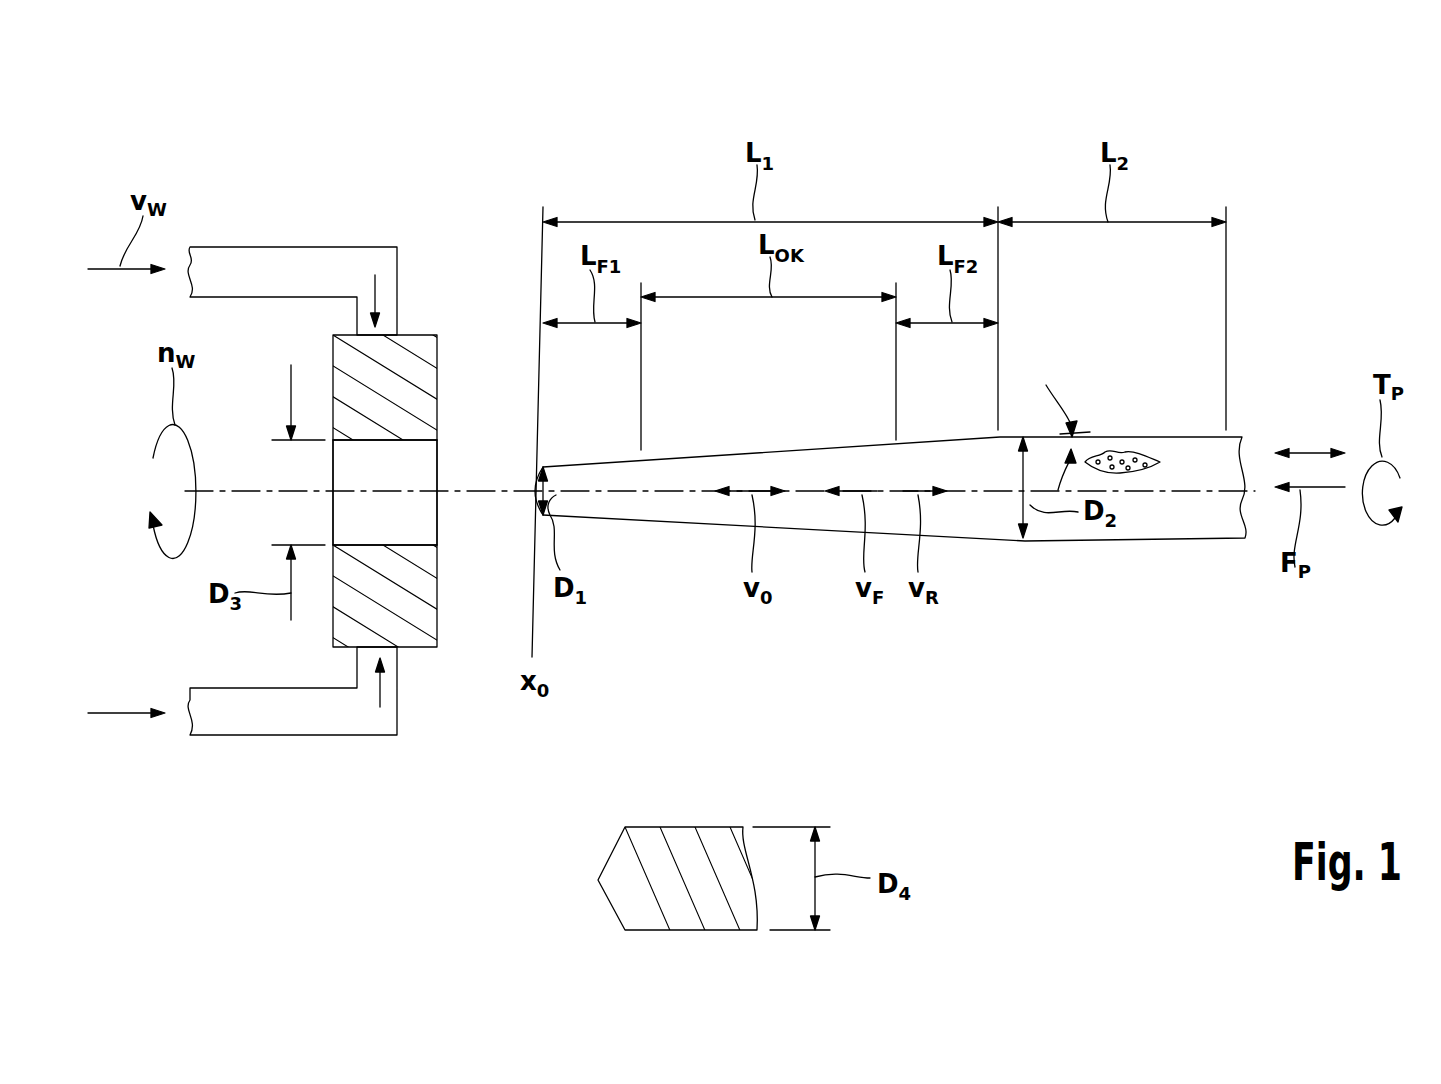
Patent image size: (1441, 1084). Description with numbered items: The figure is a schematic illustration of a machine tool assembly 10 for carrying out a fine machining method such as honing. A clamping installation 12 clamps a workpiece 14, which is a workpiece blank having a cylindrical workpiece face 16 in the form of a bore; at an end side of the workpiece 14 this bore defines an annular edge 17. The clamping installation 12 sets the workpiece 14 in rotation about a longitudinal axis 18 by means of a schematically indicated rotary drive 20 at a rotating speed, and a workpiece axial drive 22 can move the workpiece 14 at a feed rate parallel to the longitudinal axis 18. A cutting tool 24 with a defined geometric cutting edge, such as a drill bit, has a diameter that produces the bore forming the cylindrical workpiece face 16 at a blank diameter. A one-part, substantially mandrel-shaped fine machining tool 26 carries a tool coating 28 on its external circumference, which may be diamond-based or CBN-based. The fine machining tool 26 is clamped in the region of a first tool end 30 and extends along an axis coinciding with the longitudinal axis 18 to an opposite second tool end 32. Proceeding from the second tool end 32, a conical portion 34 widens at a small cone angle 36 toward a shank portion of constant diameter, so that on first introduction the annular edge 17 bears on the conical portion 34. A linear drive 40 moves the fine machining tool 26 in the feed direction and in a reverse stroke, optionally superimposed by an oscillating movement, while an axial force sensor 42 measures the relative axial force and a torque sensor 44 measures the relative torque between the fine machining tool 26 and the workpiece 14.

The machine tool assembly 10 is at (1284, 140).
The clamping installation 12 is at (300, 232).
The workpiece 14 is at (393, 443).
The cylindrical workpiece face 16 is at (392, 535).
The annular edge 17 is at (437, 440).
The longitudinal axis 18 is at (413, 492).
The rotary drive 20 is at (198, 488).
The workpiece axial drive 22 is at (93, 266).
The cutting tool 24 is at (627, 902).
The fine machining tool 26 is at (919, 522).
The tool coating 28 is at (1130, 455).
The first tool end 30 is at (1264, 382).
The second tool end 32 is at (580, 642).
The conical portion 34 is at (680, 515).
The cone angle 36 is at (1046, 385).
The linear drive 40 is at (1308, 450).
The axial force sensor 42 is at (1338, 490).
The torque sensor 44 is at (1400, 455).